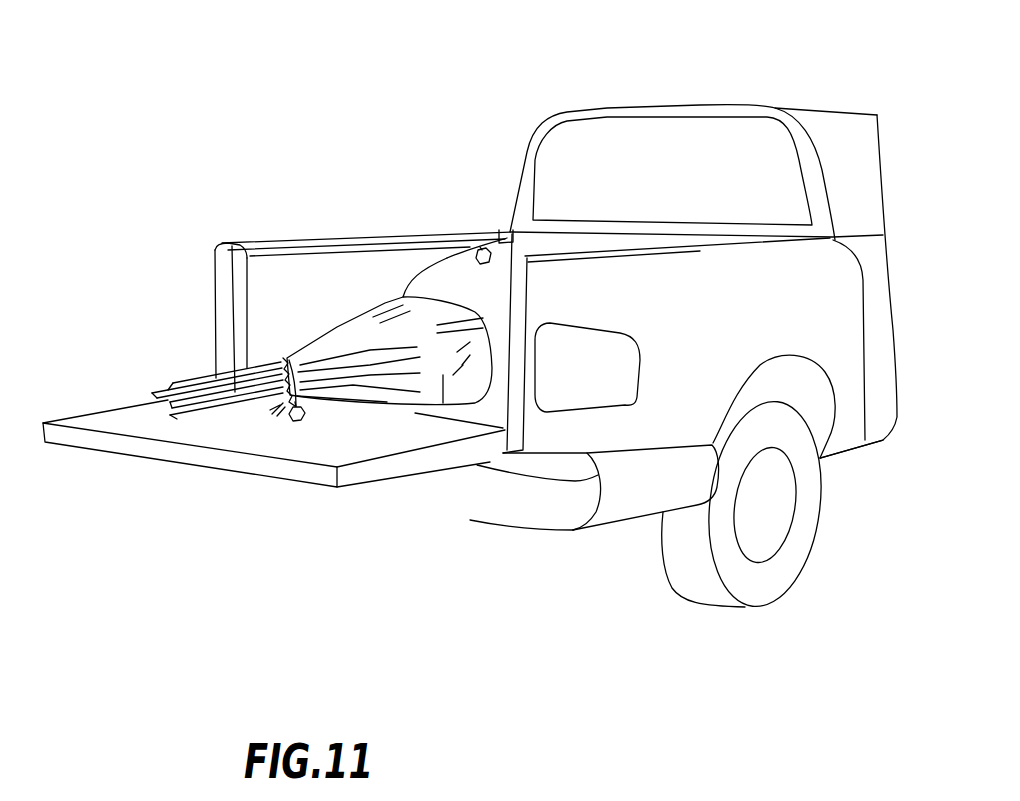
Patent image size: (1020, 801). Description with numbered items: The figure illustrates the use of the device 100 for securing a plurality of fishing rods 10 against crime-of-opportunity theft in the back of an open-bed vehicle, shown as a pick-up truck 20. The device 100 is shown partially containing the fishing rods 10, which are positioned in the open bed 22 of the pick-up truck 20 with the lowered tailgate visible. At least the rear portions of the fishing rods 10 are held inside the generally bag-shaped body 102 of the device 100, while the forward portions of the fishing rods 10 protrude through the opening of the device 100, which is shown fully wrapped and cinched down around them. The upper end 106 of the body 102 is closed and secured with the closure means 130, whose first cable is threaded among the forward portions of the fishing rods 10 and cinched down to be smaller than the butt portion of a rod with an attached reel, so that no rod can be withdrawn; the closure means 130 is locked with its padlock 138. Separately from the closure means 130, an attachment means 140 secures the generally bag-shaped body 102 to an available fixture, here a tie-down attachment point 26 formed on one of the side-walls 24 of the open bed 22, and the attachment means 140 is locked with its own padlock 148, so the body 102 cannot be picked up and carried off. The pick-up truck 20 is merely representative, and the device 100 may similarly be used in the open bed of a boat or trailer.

The fishing rods 10 is at (210, 388).
The pick-up truck 20 is at (705, 104).
The open bed 22 is at (504, 420).
The side-wall 24 is at (480, 242).
The tie-down attachment point 26 is at (508, 230).
The device 100 is at (334, 327).
The generally bag-shaped body 102 is at (445, 405).
The upper end 106 is at (285, 356).
The closure means 130 is at (272, 406).
The padlock 138 is at (297, 412).
The attachment means 140 is at (414, 270).
The padlock 148 is at (440, 252).